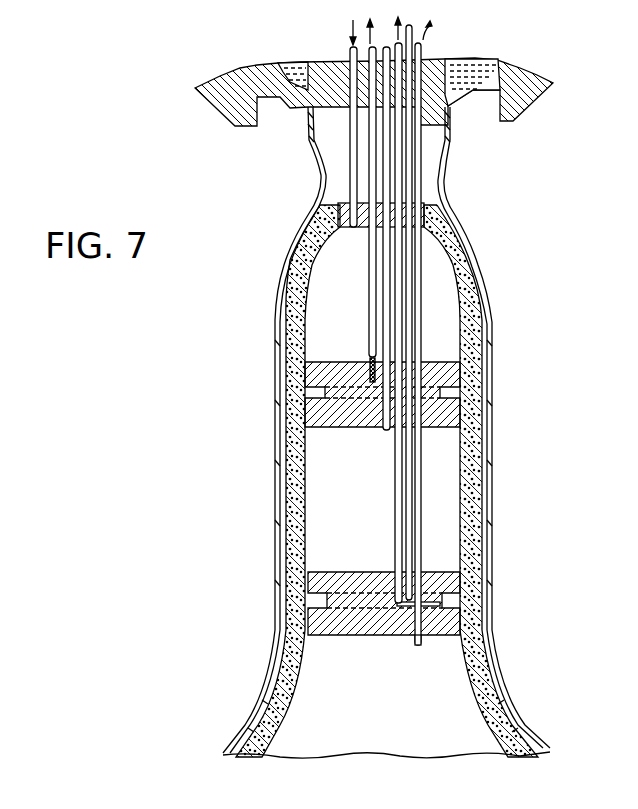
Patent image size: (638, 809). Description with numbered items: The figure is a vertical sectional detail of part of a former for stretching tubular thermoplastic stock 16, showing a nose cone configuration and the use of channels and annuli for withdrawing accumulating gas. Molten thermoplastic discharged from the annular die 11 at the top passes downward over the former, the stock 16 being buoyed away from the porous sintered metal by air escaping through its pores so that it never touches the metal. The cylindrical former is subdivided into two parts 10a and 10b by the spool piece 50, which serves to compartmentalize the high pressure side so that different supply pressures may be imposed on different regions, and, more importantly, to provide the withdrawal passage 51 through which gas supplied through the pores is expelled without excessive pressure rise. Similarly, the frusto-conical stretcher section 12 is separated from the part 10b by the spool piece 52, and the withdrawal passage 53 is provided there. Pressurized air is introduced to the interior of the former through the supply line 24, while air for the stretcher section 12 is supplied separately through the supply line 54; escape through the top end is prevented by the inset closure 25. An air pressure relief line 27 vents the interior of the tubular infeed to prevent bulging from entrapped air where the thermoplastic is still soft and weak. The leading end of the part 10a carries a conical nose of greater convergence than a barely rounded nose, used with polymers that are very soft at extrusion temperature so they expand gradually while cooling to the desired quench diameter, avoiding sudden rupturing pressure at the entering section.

The annular die 11 is at (450, 107).
The air pressure relief line 27 is at (418, 64).
The supply line 54 is at (409, 23).
The supply line 24 is at (352, 142).
The inset closure 25 is at (342, 227).
The first part of cylindrical former 10a is at (293, 273).
The second part of cylindrical former 10b is at (286, 491).
The tubular thermoplastic stock 16 is at (498, 681).
The frusto-conical stretcher section 12 is at (282, 705).
The spool piece 50 is at (457, 370).
The withdrawal passage 51 is at (300, 392).
The withdrawal passage 53 is at (467, 603).
The spool piece 52 is at (443, 628).